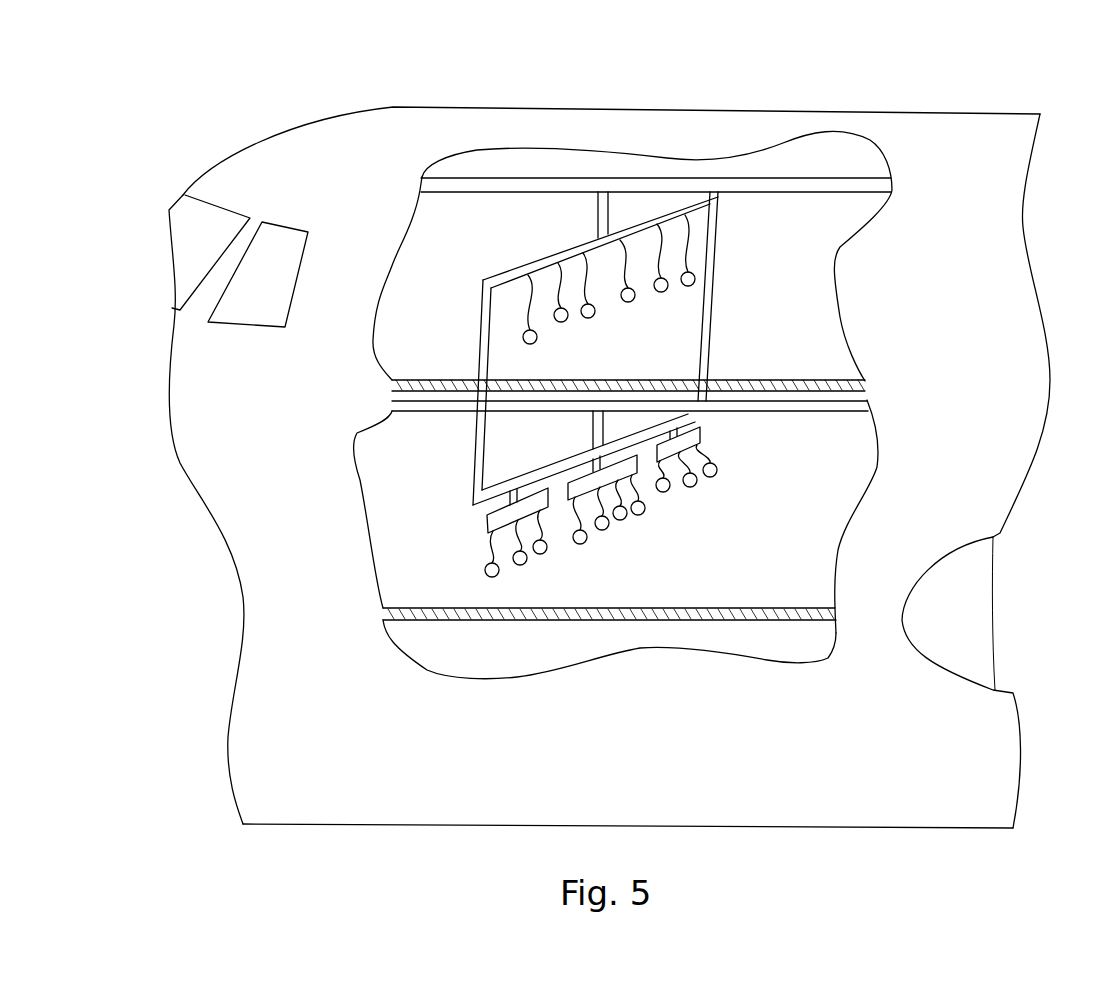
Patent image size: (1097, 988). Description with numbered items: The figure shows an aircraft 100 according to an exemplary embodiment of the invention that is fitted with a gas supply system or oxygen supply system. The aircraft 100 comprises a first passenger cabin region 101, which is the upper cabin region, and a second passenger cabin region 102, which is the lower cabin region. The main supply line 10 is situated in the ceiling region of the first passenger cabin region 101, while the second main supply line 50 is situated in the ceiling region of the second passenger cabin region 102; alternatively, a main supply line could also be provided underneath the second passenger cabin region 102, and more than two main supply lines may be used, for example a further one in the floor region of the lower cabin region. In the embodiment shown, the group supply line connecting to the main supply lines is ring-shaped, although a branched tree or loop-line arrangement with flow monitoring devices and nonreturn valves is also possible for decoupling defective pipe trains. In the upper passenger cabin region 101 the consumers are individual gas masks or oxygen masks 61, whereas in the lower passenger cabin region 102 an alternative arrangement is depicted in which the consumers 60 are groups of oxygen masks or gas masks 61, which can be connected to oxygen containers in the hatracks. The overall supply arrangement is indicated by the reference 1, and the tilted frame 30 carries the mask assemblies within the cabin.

The sensor module assembly 1 is at (627, 315).
The main supply line 10 is at (493, 167).
The carrier frame 30 is at (640, 210).
The second main supply line 50 is at (430, 402).
The consumers 60 is at (628, 302).
The oxygen masks 61 is at (700, 428).
The aircraft 100 is at (845, 812).
The first passenger cabin region 101 is at (812, 278).
The second passenger cabin region 102 is at (783, 620).